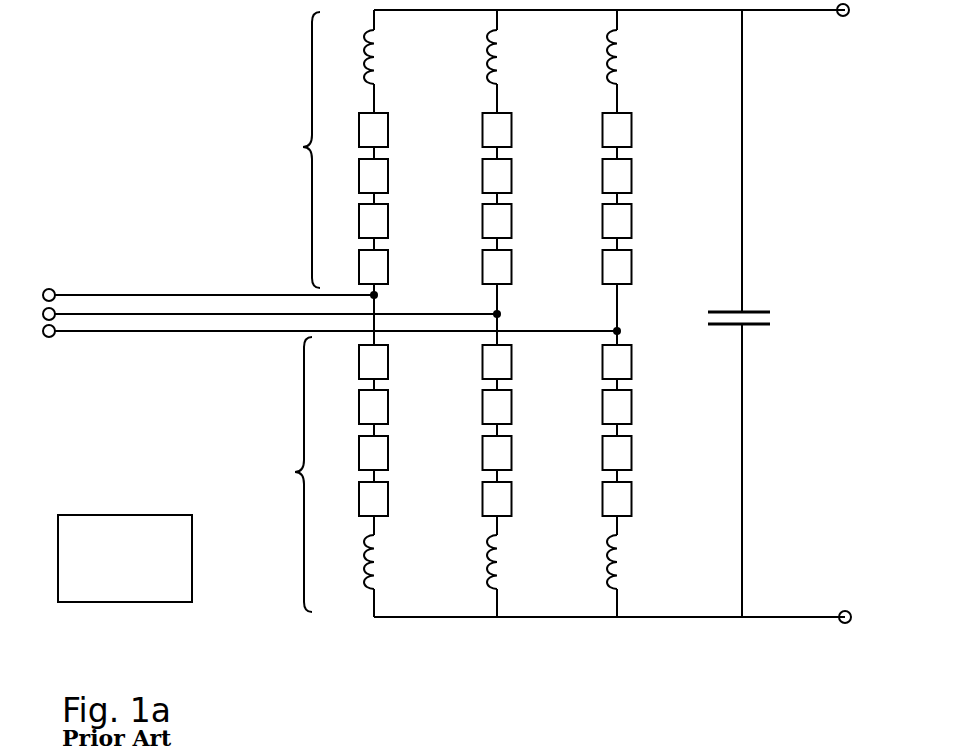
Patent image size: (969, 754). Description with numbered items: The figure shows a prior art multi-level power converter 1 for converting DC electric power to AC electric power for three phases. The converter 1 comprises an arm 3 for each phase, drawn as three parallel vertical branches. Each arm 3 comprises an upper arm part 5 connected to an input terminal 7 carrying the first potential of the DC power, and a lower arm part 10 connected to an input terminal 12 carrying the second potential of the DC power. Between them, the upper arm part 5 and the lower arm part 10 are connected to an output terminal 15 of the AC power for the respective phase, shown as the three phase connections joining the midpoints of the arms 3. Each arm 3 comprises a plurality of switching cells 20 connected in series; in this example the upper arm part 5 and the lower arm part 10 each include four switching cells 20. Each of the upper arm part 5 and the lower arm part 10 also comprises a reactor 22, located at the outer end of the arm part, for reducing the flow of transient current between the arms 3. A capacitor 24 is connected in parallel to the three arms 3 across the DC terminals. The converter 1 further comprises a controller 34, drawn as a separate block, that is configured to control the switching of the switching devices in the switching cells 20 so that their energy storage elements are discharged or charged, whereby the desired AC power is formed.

The multi-level power converter 1 is at (220, 34).
The arm 3 is at (378, 633).
The upper arm part 5 is at (297, 150).
The input terminal 7 is at (852, 20).
The lower arm part 10 is at (285, 474).
The input terminal 12 is at (852, 605).
The output terminal 15 is at (146, 276).
The switching cell 20 is at (383, 141).
The reactor 22 is at (379, 52).
The capacitor 24 is at (757, 303).
The controller 34 is at (175, 593).